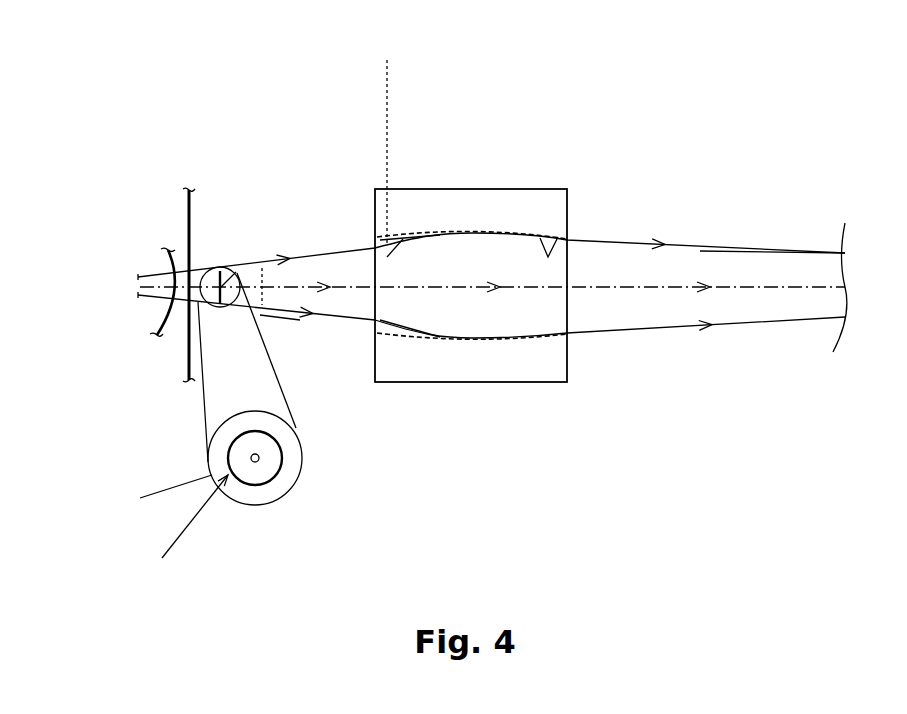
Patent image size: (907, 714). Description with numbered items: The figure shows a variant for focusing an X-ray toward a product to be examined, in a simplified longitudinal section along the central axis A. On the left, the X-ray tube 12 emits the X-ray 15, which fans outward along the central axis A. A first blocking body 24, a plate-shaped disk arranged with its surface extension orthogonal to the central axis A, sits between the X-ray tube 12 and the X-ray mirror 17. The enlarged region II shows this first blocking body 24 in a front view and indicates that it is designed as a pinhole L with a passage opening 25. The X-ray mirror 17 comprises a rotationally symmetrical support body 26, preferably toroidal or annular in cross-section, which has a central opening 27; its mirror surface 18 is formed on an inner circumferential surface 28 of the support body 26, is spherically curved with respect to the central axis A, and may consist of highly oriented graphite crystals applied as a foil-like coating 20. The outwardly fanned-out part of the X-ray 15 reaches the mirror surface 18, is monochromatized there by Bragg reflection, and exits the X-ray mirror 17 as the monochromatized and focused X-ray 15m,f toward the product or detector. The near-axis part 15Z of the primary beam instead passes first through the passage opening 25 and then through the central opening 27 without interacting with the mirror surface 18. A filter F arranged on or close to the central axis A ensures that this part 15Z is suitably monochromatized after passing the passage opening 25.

The X-ray tube 12 is at (96, 292).
The X-ray 15 is at (153, 275).
The monochromatized and focused X-ray 15m,f is at (788, 251).
The part, close to the axis, of the primary beam 15Z is at (318, 290).
The first blocking body 24 is at (237, 266).
The passage opening 25 is at (257, 461).
The filter F is at (262, 275).
The X-ray mirror 17 is at (508, 189).
The mirror surface 18 is at (386, 142).
The foil-like coating 20 is at (443, 232).
The support body 26 is at (530, 212).
The central opening 27 is at (407, 308).
The inner circumferential surface 28 is at (558, 237).
The central axis A is at (250, 457).
The region II is at (164, 495).
The pinhole L is at (147, 590).